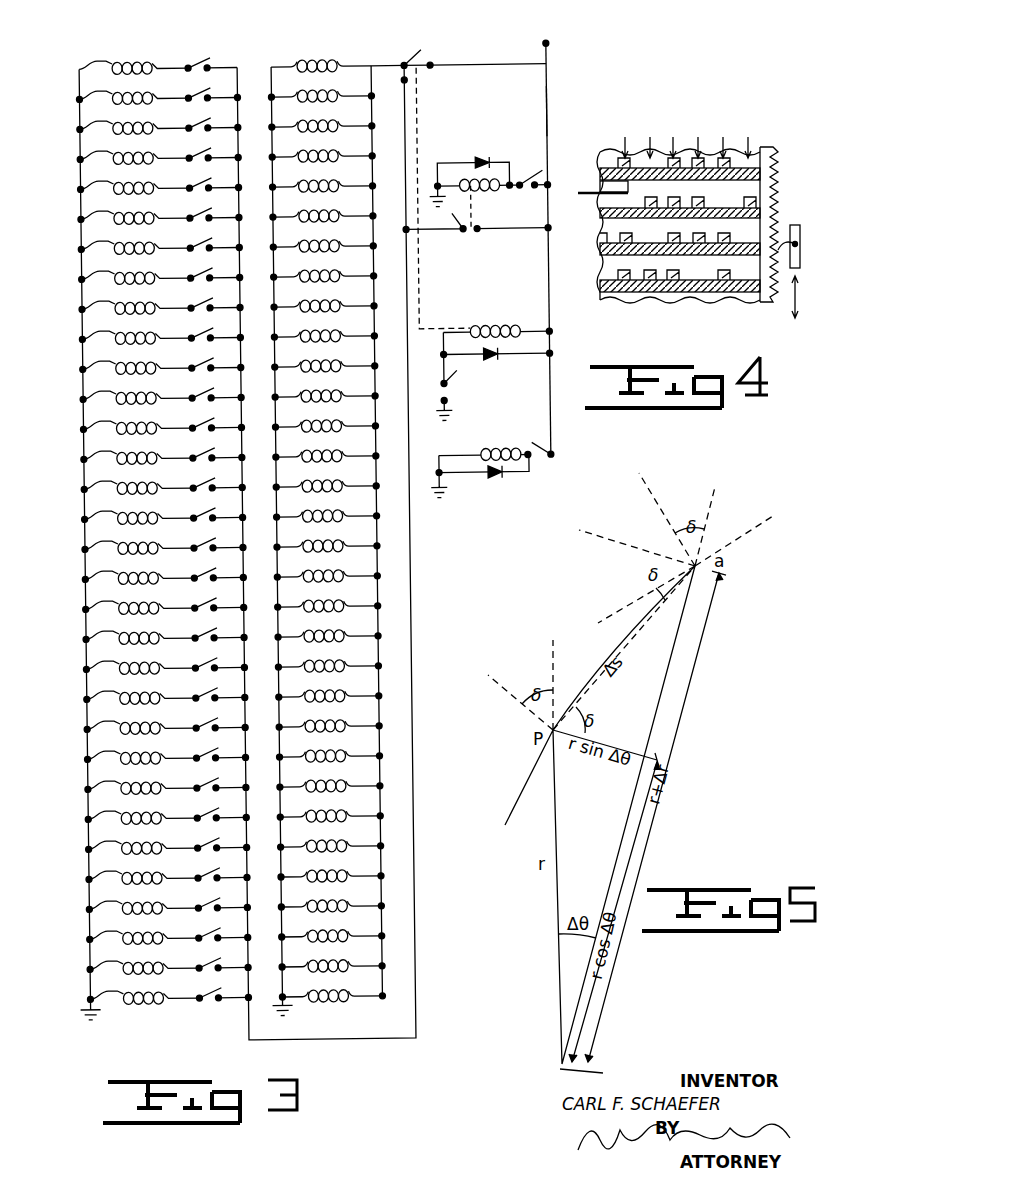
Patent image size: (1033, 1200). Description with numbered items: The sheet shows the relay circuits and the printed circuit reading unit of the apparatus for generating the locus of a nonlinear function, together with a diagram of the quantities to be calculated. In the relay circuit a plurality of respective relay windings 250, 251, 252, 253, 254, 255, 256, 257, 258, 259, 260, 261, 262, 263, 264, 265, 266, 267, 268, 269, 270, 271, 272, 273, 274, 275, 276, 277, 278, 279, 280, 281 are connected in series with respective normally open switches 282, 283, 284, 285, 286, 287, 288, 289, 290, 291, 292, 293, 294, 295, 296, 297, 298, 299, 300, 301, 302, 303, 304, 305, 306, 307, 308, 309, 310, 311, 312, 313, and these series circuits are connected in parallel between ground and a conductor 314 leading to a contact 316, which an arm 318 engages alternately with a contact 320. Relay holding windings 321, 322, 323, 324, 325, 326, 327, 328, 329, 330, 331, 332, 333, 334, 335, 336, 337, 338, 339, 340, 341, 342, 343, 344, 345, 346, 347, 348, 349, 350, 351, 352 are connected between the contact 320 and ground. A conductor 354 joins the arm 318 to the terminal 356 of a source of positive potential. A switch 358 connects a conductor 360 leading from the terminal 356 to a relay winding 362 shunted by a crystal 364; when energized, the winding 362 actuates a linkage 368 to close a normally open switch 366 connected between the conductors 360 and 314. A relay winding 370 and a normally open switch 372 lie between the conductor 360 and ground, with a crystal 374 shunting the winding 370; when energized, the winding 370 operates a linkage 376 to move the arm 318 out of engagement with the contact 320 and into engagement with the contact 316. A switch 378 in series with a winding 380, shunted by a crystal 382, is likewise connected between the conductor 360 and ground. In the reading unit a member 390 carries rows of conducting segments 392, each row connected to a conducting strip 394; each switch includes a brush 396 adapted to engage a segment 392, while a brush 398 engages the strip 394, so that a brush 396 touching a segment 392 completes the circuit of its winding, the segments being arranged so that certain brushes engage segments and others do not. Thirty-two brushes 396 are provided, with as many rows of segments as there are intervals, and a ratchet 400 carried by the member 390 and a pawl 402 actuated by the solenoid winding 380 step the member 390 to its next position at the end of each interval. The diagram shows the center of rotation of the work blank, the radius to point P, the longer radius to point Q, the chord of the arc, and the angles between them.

In FIG. 3, the relay winding 250 is at (134, 51).
In FIG. 3, the relay winding 251 is at (114, 87).
In FIG. 3, the relay winding 252 is at (114, 117).
In FIG. 3, the relay winding 253 is at (114, 147).
In FIG. 3, the relay winding 254 is at (115, 177).
In FIG. 3, the relay winding 255 is at (115, 207).
In FIG. 3, the relay winding 256 is at (116, 237).
In FIG. 3, the relay winding 257 is at (116, 267).
In FIG. 3, the relay winding 258 is at (116, 297).
In FIG. 3, the relay winding 259 is at (117, 327).
In FIG. 3, the relay winding 260 is at (117, 357).
In FIG. 3, the relay winding 261 is at (117, 387).
In FIG. 3, the relay winding 262 is at (118, 417).
In FIG. 3, the relay winding 263 is at (118, 447).
In FIG. 3, the relay winding 264 is at (118, 477).
In FIG. 3, the relay winding 265 is at (119, 507).
In FIG. 3, the relay winding 266 is at (119, 537).
In FIG. 3, the relay winding 267 is at (120, 567).
In FIG. 3, the relay winding 268 is at (120, 597).
In FIG. 3, the relay winding 269 is at (120, 627).
In FIG. 3, the relay winding 270 is at (121, 657).
In FIG. 3, the relay winding 271 is at (121, 687).
In FIG. 3, the relay winding 272 is at (121, 717).
In FIG. 3, the relay winding 273 is at (122, 747).
In FIG. 3, the relay winding 274 is at (122, 777).
In FIG. 3, the relay winding 275 is at (122, 807).
In FIG. 3, the relay winding 276 is at (123, 837).
In FIG. 3, the relay winding 277 is at (123, 867).
In FIG. 3, the relay winding 278 is at (124, 897).
In FIG. 3, the relay winding 279 is at (124, 927).
In FIG. 3, the relay winding 280 is at (124, 957).
In FIG. 3, the relay winding 281 is at (125, 987).
In FIG. 3, the normally open switch 282 is at (209, 52).
In FIG. 3, the normally open switch 283 is at (195, 85).
In FIG. 3, the normally open switch 284 is at (195, 115).
In FIG. 3, the normally open switch 285 is at (195, 145).
In FIG. 3, the normally open switch 286 is at (196, 175).
In FIG. 3, the normally open switch 287 is at (196, 205).
In FIG. 3, the normally open switch 288 is at (197, 235).
In FIG. 3, the normally open switch 289 is at (197, 265).
In FIG. 3, the normally open switch 290 is at (197, 295).
In FIG. 3, the normally open switch 291 is at (198, 325).
In FIG. 3, the normally open switch 292 is at (198, 355).
In FIG. 3, the normally open switch 293 is at (198, 385).
In FIG. 3, the normally open switch 294 is at (199, 415).
In FIG. 3, the normally open switch 295 is at (199, 445).
In FIG. 3, the normally open switch 296 is at (199, 475).
In FIG. 3, the normally open switch 297 is at (200, 505).
In FIG. 3, the normally open switch 298 is at (200, 535).
In FIG. 3, the normally open switch 299 is at (201, 565).
In FIG. 3, the normally open switch 300 is at (201, 595).
In FIG. 3, the normally open switch 301 is at (201, 625).
In FIG. 3, the normally open switch 302 is at (202, 655).
In FIG. 3, the normally open switch 303 is at (202, 685).
In FIG. 3, the normally open switch 304 is at (202, 715).
In FIG. 3, the normally open switch 305 is at (203, 745).
In FIG. 3, the normally open switch 306 is at (203, 775).
In FIG. 3, the normally open switch 307 is at (203, 805).
In FIG. 3, the normally open switch 308 is at (204, 835).
In FIG. 3, the normally open switch 309 is at (204, 865).
In FIG. 3, the normally open switch 310 is at (205, 895).
In FIG. 3, the normally open switch 311 is at (205, 925).
In FIG. 3, the normally open switch 312 is at (205, 955).
In FIG. 3, the normally open switch 313 is at (223, 984).
In FIG. 3, the conductor 314 is at (412, 766).
In FIG. 3, the contact 316 is at (412, 82).
In FIG. 3, the arm 318 is at (437, 66).
In FIG. 3, the contact 320 is at (409, 63).
In FIG. 3, the relay holding winding 321 is at (338, 49).
In FIG. 3, the relay holding winding 322 is at (321, 86).
In FIG. 3, the relay holding winding 323 is at (322, 116).
In FIG. 3, the relay holding winding 324 is at (322, 146).
In FIG. 3, the relay holding winding 325 is at (322, 176).
In FIG. 3, the relay holding winding 326 is at (323, 206).
In FIG. 3, the relay holding winding 327 is at (323, 236).
In FIG. 3, the relay holding winding 328 is at (323, 266).
In FIG. 3, the relay holding winding 329 is at (324, 296).
In FIG. 3, the relay holding winding 330 is at (324, 326).
In FIG. 3, the relay holding winding 331 is at (324, 356).
In FIG. 3, the relay holding winding 332 is at (325, 386).
In FIG. 3, the relay holding winding 333 is at (325, 416).
In FIG. 3, the relay holding winding 334 is at (326, 446).
In FIG. 3, the relay holding winding 335 is at (326, 476).
In FIG. 3, the relay holding winding 336 is at (326, 506).
In FIG. 3, the relay holding winding 337 is at (327, 536).
In FIG. 3, the relay holding winding 338 is at (327, 566).
In FIG. 3, the relay holding winding 339 is at (327, 596).
In FIG. 3, the relay holding winding 340 is at (328, 626).
In FIG. 3, the relay holding winding 341 is at (328, 656).
In FIG. 3, the relay holding winding 342 is at (328, 686).
In FIG. 3, the relay holding winding 343 is at (329, 716).
In FIG. 3, the relay holding winding 344 is at (329, 746).
In FIG. 3, the relay holding winding 345 is at (330, 776).
In FIG. 3, the relay holding winding 346 is at (330, 806).
In FIG. 3, the relay holding winding 347 is at (330, 836).
In FIG. 3, the relay holding winding 348 is at (331, 866).
In FIG. 3, the relay holding winding 349 is at (331, 896).
In FIG. 3, the relay holding winding 350 is at (331, 926).
In FIG. 3, the relay holding winding 351 is at (332, 956).
In FIG. 3, the relay holding winding 352 is at (332, 986).
In FIG. 3, the conductor 354 is at (498, 67).
In FIG. 3, the terminal 356 is at (554, 49).
In FIG. 3, the switch 358 is at (538, 180).
In FIG. 3, the conductor 360 is at (554, 118).
In FIG. 3, the relay winding 362 is at (492, 196).
In FIG. 3, the crystal 364 is at (492, 162).
In FIG. 3, the normally open switch 366 is at (470, 240).
In FIG. 3, the linkage 368 is at (478, 226).
In FIG. 3, the relay winding 370 is at (500, 330).
In FIG. 3, the normally open switch 372 is at (460, 396).
In FIG. 3, the crystal 374 is at (494, 366).
In FIG. 3, the linkage 376 is at (421, 284).
In FIG. 3, the switch 378 is at (556, 456).
In FIG. 3, the solenoid winding 380 is at (504, 452).
In FIG. 3, the crystal 382 is at (490, 482).
In FIG. 4, the member 390 is at (712, 305).
In FIG. 4, the conducting segments 392 is at (674, 160).
In FIG. 4, the conducting strip 394 is at (758, 128).
In FIG. 4, the brush 396 is at (627, 150).
In FIG. 4, the brush 398 is at (602, 190).
In FIG. 4, the ratchet 400 is at (778, 168).
In FIG. 4, the pawl 402 is at (795, 322).